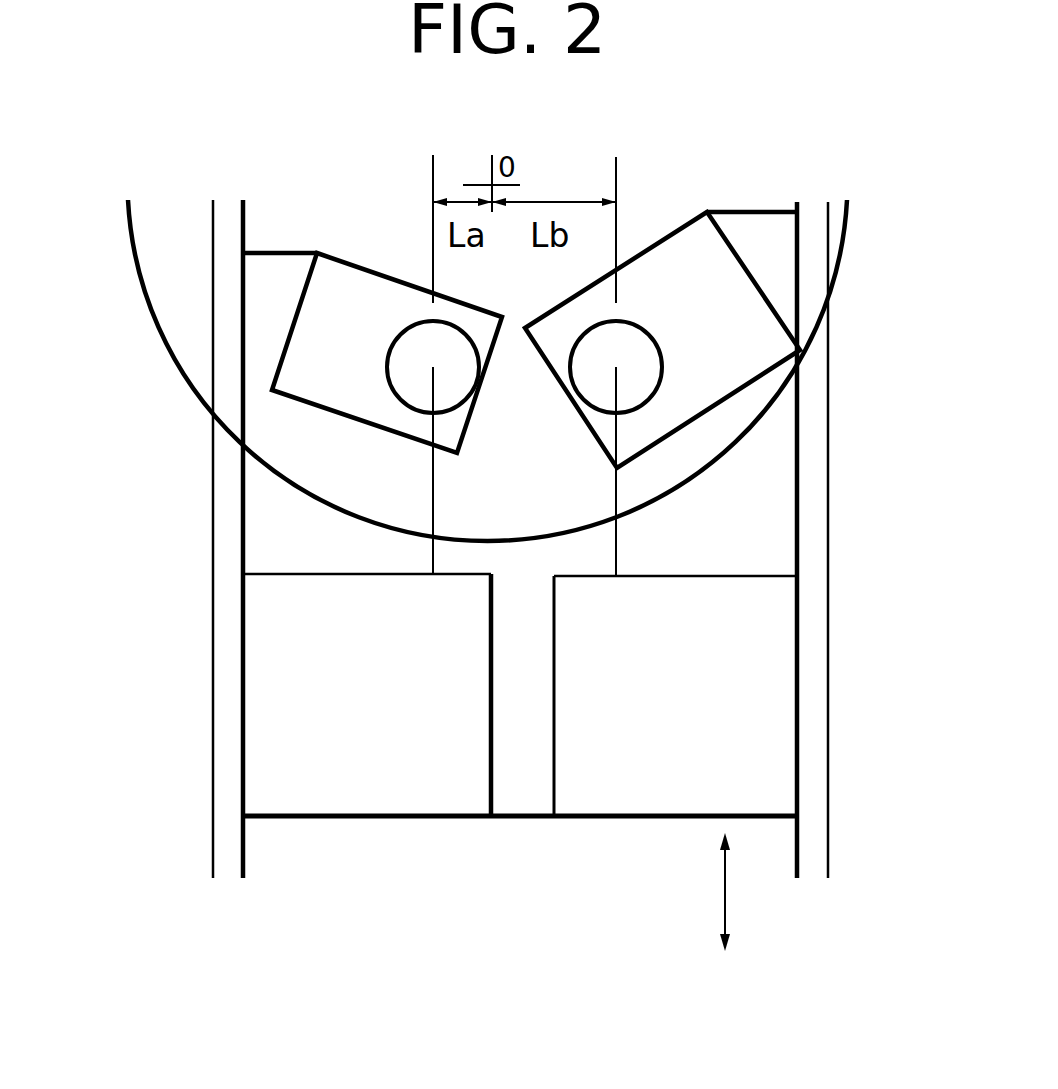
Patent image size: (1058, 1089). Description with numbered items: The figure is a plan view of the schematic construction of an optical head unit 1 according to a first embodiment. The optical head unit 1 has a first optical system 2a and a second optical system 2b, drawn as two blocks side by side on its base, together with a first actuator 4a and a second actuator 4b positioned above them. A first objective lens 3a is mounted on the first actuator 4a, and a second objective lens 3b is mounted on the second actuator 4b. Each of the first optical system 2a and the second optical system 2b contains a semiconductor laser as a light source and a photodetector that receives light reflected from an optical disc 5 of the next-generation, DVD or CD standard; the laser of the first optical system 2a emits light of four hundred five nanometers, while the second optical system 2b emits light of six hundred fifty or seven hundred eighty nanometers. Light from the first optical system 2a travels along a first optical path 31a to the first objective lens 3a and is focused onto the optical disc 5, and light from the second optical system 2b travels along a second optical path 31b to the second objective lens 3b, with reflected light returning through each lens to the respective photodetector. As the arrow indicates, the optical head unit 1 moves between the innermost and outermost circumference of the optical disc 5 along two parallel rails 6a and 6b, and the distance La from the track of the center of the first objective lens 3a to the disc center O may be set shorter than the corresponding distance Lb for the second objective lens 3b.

The optical head unit 1 is at (537, 796).
The first optical system 2a is at (378, 704).
The second optical system 2b is at (692, 706).
The first objective lens 3a is at (405, 369).
The second objective lens 3b is at (630, 387).
The first optical path 31a is at (431, 512).
The second optical path 31b is at (618, 507).
The first actuator 4a is at (347, 270).
The second actuator 4b is at (673, 252).
The optical disc 5 is at (163, 217).
The rail 6a is at (220, 689).
The rail 6b is at (786, 707).